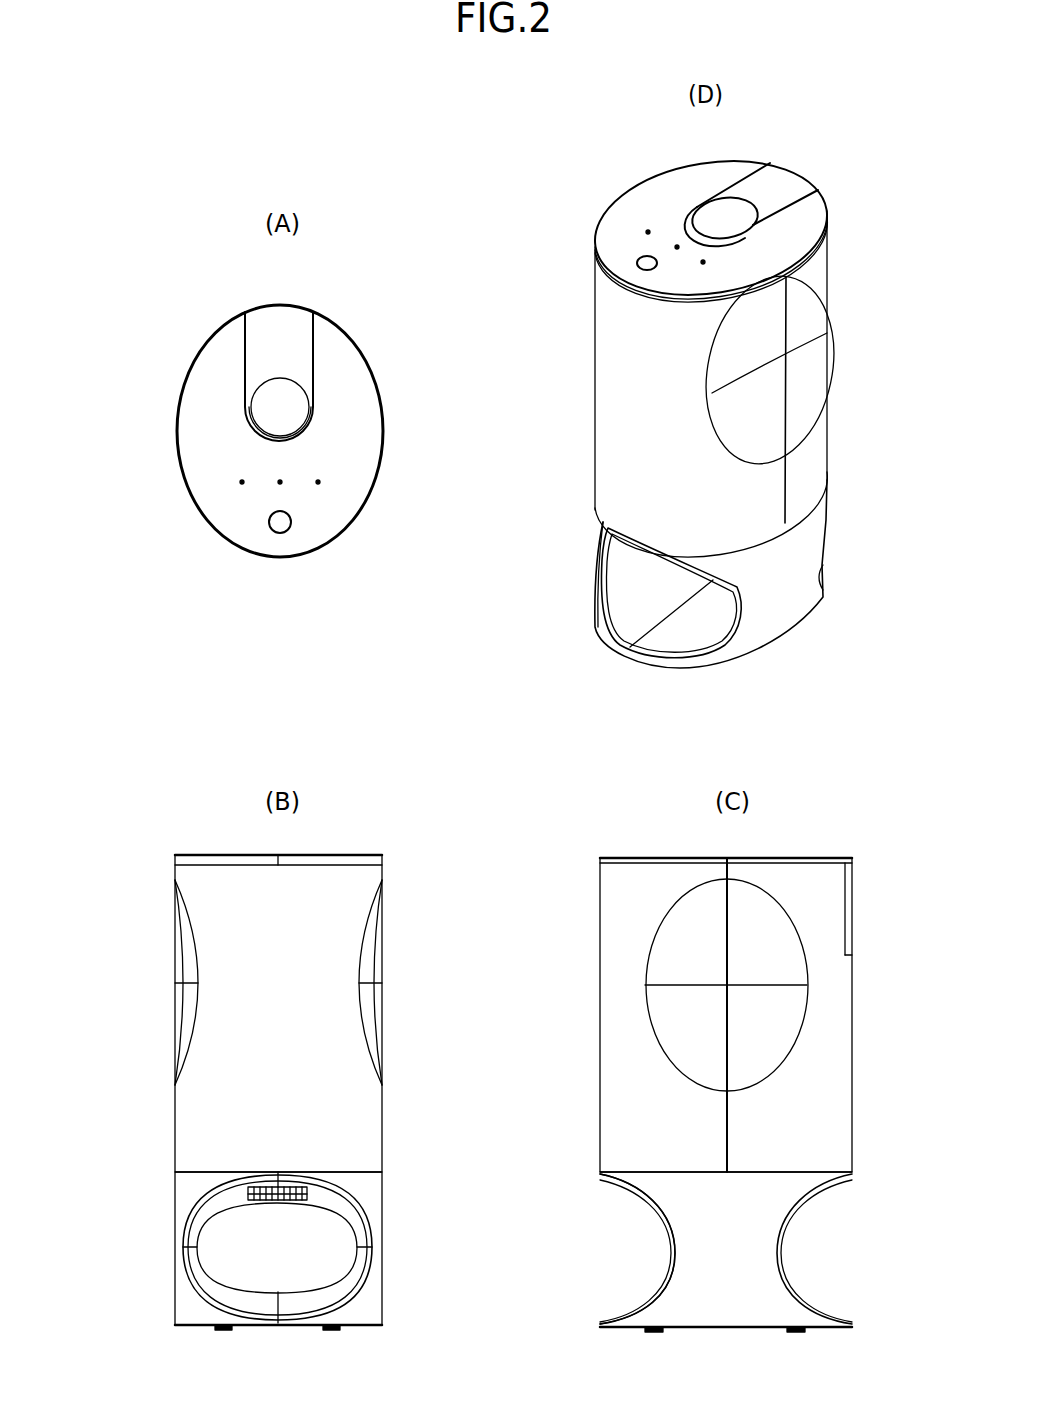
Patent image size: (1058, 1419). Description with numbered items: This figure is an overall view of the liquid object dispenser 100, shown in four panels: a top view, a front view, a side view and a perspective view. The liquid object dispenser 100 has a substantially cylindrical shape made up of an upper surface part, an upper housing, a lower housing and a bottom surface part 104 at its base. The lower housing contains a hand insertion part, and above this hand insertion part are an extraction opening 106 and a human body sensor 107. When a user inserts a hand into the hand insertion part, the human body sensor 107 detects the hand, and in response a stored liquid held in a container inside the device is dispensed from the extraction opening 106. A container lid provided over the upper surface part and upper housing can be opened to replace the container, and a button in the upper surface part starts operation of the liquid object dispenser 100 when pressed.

The liquid object dispenser 100 is at (123, 157).
The bottom surface part 104 is at (720, 1330).
The extraction opening 106 is at (279, 1180).
The human body sensor 107 is at (278, 1200).